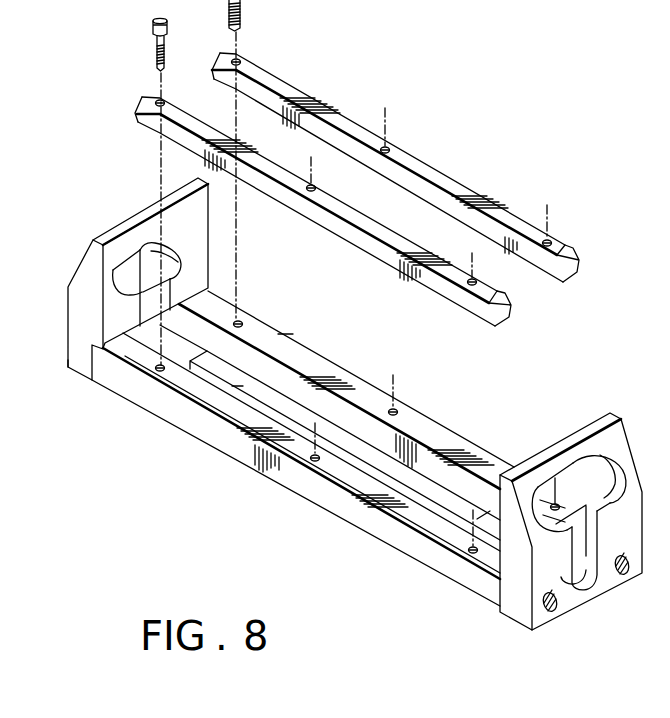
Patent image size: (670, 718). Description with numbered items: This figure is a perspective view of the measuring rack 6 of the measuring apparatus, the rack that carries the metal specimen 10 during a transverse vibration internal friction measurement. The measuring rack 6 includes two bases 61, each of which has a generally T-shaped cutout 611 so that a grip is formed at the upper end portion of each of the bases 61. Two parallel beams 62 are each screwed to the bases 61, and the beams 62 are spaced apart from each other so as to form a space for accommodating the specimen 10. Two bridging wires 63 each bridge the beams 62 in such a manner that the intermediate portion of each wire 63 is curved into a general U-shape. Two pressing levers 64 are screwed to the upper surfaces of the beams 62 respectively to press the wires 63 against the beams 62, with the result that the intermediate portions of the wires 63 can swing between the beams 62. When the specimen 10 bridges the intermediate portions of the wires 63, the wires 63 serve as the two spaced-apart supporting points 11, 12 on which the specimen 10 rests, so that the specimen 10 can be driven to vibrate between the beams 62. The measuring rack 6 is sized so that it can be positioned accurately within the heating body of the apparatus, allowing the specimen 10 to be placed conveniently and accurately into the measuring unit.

The measuring rack 6 is at (118, 403).
The metal specimen 10 is at (300, 421).
The supporting point 11 is at (238, 382).
The supporting point 12 is at (478, 516).
The base 61 is at (72, 300).
The T-shaped cutout 611 is at (183, 236).
The beam 62 is at (360, 383).
The bridging wire 63 is at (185, 420).
The pressing lever 64 is at (408, 246).